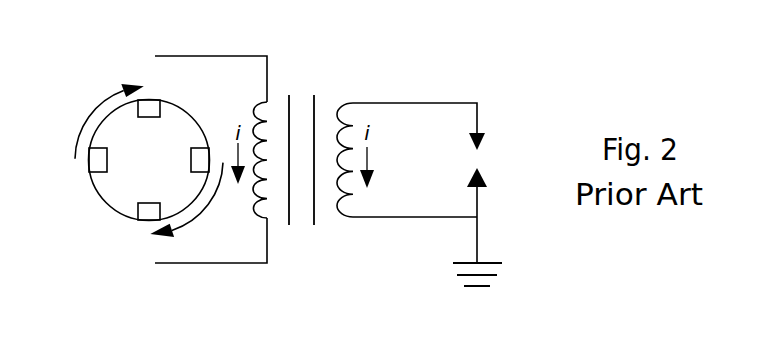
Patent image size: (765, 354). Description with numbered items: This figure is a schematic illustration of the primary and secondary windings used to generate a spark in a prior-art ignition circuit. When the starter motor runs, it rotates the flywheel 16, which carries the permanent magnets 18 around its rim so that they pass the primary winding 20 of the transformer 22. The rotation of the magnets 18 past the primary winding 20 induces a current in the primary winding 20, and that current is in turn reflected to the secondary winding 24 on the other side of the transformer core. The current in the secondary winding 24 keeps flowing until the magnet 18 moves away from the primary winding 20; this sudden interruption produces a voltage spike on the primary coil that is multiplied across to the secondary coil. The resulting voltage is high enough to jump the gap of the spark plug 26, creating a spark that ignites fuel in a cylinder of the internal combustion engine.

The flywheel 16 is at (105, 202).
The permanent magnets 18 is at (151, 101).
The primary winding 20 is at (268, 96).
The transformer 22 is at (302, 256).
The secondary winding 24 is at (353, 102).
The spark plug 26 is at (481, 132).